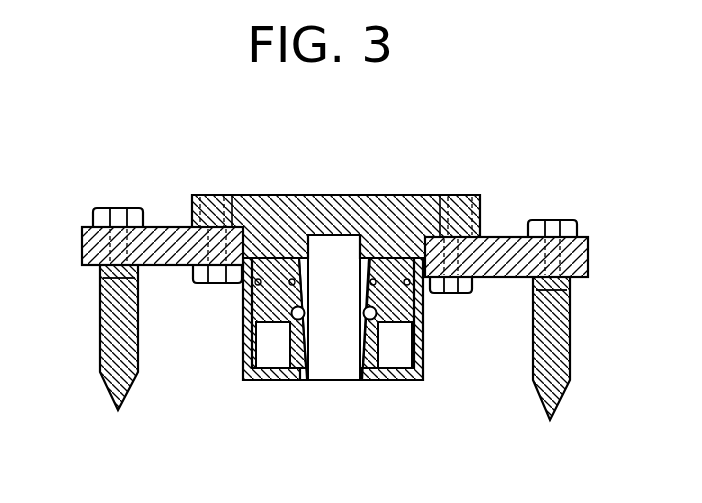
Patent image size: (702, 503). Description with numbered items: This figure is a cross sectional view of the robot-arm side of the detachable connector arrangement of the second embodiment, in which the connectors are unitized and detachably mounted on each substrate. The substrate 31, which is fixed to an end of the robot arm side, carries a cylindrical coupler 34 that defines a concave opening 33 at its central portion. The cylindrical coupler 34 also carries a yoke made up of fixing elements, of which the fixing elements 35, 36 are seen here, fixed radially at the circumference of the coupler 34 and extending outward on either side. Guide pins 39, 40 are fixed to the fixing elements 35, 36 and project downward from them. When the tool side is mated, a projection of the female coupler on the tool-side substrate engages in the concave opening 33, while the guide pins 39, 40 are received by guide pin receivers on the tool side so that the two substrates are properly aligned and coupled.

The substrate 31 is at (290, 186).
The concave opening 33 is at (367, 350).
The cylindrical coupler 34 is at (242, 380).
The fixing element 35 is at (172, 228).
The fixing element 36 is at (500, 237).
The guide pin 39 is at (117, 375).
The guide pin 40 is at (553, 400).